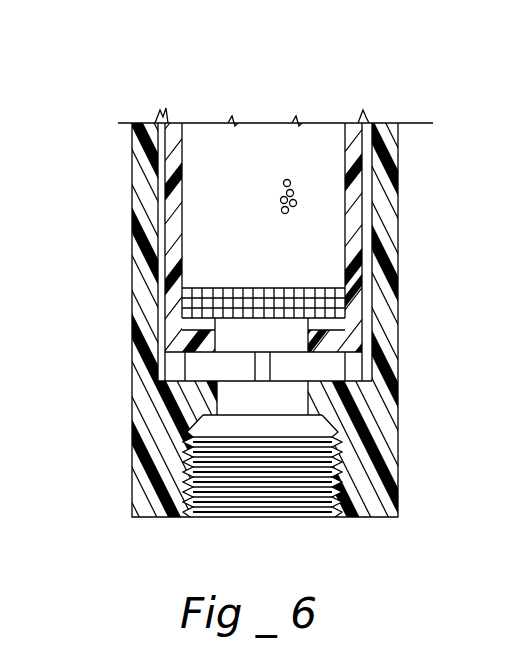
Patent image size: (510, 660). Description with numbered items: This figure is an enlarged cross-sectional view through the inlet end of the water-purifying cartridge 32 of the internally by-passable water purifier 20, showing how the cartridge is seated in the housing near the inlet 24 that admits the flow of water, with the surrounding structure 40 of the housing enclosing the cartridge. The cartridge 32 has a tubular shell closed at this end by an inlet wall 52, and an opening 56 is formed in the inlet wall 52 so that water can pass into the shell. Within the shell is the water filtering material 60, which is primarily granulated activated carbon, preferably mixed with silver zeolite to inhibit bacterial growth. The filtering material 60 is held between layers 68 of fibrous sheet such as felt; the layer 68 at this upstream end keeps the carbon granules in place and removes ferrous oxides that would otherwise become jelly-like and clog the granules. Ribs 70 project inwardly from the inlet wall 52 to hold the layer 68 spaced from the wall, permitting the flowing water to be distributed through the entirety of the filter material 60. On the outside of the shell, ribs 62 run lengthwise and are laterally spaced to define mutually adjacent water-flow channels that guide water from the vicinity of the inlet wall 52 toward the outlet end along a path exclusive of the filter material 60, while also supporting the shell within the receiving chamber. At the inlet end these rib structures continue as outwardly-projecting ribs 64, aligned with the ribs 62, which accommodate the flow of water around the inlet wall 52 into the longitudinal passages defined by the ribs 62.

The internally by-passable water purifier 20 is at (131, 200).
The inlet 24 is at (197, 490).
The water-purifying cartridge 32 is at (347, 213).
The body 40 is at (392, 217).
The inlet wall 52 is at (337, 352).
The opening 56 is at (240, 367).
The water filtering material 60 is at (282, 184).
The ribs 62 is at (162, 203).
The outwardly-projecting ribs 64 is at (347, 374).
The layers of fibrous sheet 68 is at (320, 288).
The ribs 70 is at (192, 323).